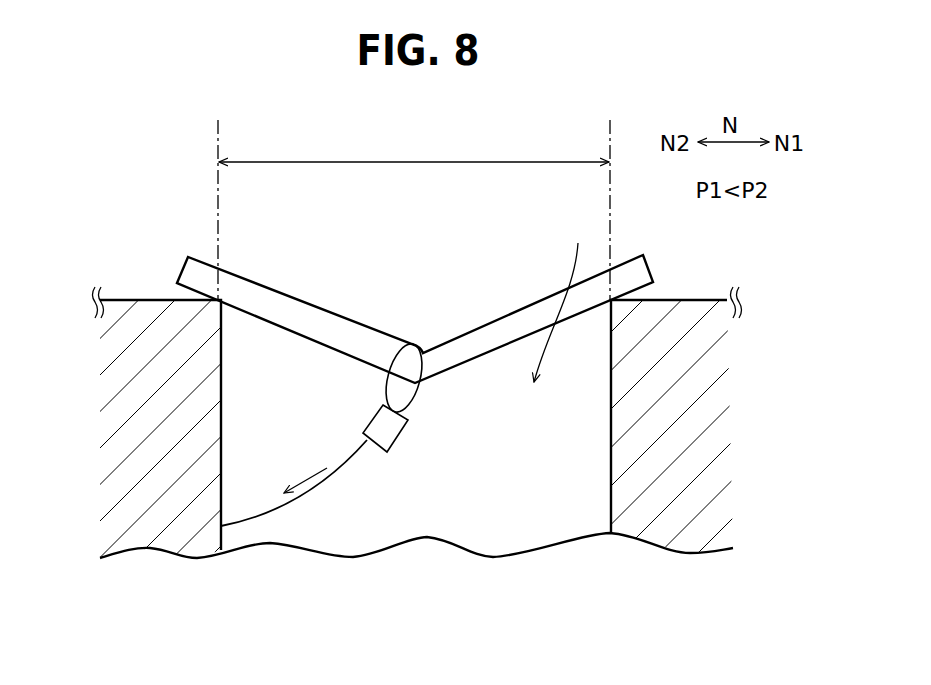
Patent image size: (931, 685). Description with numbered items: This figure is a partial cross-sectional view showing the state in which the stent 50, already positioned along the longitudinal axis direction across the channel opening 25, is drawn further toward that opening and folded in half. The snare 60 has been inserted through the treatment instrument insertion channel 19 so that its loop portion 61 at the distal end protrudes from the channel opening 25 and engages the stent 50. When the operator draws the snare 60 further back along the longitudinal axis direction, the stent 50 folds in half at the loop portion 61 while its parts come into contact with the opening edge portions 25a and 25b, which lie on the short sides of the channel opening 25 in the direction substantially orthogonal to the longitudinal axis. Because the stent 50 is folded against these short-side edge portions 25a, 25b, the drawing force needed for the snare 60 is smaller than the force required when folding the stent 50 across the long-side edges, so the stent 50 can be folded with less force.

The treatment instrument insertion channel 19 is at (534, 450).
The channel opening 25 is at (421, 275).
The opening edge portion 25a is at (612, 300).
The opening edge portion 25b is at (220, 300).
The stent 50 is at (523, 327).
The snare 60 is at (308, 495).
The loop portion 61 is at (421, 396).